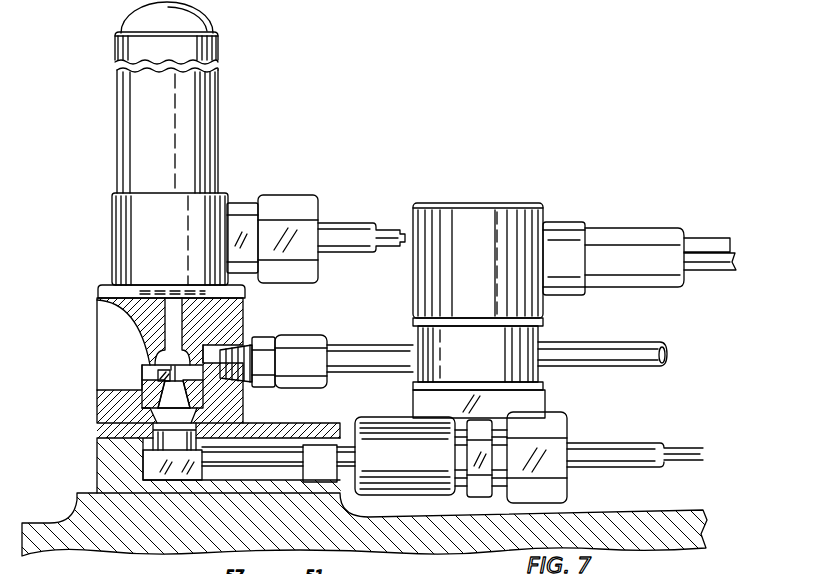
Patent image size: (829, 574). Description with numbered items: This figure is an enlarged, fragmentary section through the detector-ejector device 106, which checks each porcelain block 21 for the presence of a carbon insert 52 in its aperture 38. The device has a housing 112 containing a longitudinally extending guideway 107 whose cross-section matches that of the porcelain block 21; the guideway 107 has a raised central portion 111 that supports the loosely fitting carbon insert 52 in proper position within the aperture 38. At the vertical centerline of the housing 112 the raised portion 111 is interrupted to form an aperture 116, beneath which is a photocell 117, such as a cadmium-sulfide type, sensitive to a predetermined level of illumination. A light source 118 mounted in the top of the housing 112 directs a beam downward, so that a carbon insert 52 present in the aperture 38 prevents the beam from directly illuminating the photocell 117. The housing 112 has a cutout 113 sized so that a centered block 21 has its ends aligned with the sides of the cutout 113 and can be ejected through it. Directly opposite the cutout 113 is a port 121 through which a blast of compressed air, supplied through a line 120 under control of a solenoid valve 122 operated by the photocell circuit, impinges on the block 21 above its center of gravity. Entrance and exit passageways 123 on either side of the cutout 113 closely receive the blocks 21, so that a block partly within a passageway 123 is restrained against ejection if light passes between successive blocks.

The detector-ejector device 106 is at (408, 113).
The light source 118 is at (220, 157).
The solenoid valve 122 is at (513, 197).
The housing 112 is at (249, 304).
The cutout 113 is at (107, 322).
The entrance and exit passageways 123 is at (155, 367).
The carbon insert 52 is at (166, 372).
The porcelain block 21 is at (160, 375).
The aperture 38 is at (166, 380).
The raised central portion 111 is at (152, 414).
The port 121 is at (206, 356).
The guideway 107 is at (198, 391).
The aperture 116 is at (211, 421).
The photocell 117 is at (173, 483).
The line 120 is at (600, 345).